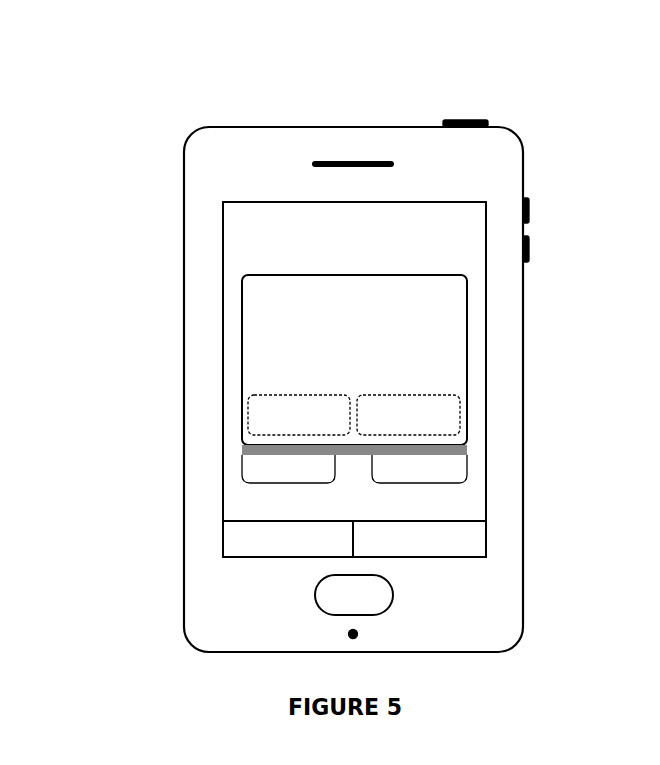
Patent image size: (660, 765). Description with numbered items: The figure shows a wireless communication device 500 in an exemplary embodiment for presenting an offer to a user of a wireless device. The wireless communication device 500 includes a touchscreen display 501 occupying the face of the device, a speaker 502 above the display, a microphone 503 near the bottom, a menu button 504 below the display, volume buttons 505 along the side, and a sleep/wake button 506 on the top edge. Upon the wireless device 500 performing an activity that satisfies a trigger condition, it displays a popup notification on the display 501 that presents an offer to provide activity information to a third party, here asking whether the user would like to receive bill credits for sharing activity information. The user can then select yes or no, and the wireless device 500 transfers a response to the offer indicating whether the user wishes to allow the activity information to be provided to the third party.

The wireless communication device 500 is at (168, 108).
The touchscreen display 501 is at (414, 202).
The speaker 502 is at (316, 162).
The microphone 503 is at (358, 633).
The menu button 504 is at (316, 602).
The volume buttons 505 is at (531, 212).
The sleep/wake button 506 is at (443, 120).